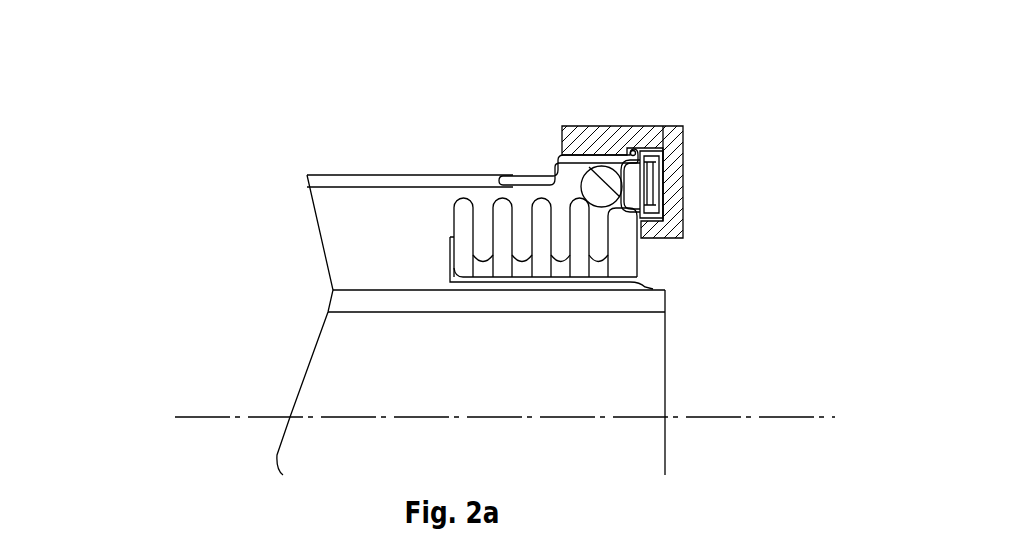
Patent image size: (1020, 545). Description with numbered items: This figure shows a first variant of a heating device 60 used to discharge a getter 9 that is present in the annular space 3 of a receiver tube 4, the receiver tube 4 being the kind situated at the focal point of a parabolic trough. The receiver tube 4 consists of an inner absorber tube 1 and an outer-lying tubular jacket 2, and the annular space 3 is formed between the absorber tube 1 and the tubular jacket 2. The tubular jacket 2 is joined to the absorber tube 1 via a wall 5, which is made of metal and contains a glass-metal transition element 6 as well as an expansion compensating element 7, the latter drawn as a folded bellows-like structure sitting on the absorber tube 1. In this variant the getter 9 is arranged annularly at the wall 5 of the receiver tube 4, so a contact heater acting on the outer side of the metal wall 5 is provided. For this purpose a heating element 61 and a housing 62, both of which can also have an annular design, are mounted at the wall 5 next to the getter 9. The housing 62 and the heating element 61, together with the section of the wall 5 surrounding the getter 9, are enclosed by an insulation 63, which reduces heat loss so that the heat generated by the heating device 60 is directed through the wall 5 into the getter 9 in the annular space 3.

The absorber tube 1 is at (350, 298).
The tubular jacket 2 is at (360, 177).
The annular space 3 is at (362, 260).
The receiver tube 4 is at (240, 378).
The wall 5 is at (670, 280).
The glass-metal transition element 6 is at (540, 180).
The expansion compensating element 7 is at (580, 228).
The getter 9 is at (566, 166).
The heating device 60 is at (700, 98).
The heating element 61 is at (650, 175).
The housing 62 is at (656, 198).
The insulation 63 is at (690, 178).